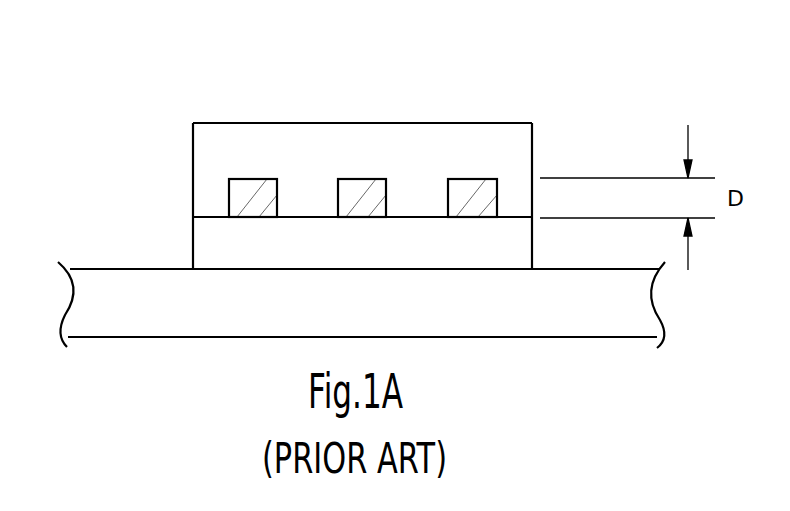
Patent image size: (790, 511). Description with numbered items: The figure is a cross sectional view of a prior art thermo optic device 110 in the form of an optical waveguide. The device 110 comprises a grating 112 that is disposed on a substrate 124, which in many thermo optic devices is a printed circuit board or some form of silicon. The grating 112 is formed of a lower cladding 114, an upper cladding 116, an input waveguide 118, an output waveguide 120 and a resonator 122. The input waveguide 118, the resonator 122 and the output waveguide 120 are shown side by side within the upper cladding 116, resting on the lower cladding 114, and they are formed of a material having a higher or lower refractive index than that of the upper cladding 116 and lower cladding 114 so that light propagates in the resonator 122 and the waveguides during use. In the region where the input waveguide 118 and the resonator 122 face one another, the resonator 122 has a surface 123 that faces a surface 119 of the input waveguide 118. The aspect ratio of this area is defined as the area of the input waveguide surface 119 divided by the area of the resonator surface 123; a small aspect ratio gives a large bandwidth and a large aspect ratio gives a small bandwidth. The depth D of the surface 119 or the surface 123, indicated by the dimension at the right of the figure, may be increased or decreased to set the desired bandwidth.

The thermo optic device 110 is at (177, 52).
The grating 112 is at (458, 122).
The lower cladding 114 is at (515, 243).
The upper cladding 116 is at (512, 128).
The input waveguide 118 is at (252, 179).
The surface of input waveguide 119 is at (279, 191).
The output waveguide 120 is at (484, 179).
The resonator 122 is at (362, 179).
The surface of resonator 123 is at (338, 193).
The substrate 124 is at (615, 275).